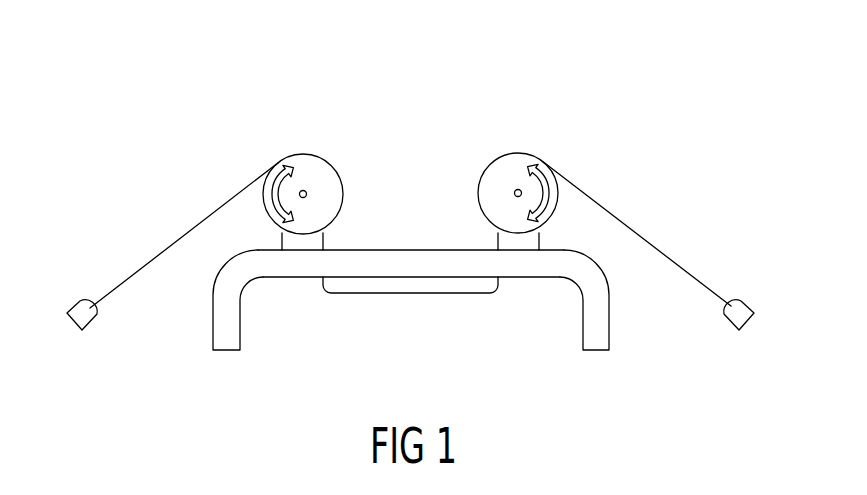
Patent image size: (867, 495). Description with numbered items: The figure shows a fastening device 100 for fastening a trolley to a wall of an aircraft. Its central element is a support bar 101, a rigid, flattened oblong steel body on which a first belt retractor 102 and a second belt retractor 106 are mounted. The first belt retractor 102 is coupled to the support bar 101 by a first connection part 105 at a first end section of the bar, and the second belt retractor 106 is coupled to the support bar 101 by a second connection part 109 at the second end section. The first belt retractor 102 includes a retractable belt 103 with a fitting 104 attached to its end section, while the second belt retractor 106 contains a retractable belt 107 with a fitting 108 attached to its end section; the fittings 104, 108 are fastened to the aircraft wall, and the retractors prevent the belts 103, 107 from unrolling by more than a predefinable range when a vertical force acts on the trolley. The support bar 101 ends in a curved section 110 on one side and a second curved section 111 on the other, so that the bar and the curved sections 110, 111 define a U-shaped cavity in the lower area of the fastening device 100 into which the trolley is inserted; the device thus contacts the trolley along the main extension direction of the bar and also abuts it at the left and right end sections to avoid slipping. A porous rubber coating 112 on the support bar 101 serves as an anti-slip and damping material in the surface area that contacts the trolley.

The fastening device 100 is at (432, 112).
The support bar 101 is at (412, 252).
The first belt retractor 102 is at (303, 165).
The retractable belt 103 is at (193, 225).
The fitting 104 is at (78, 302).
The first connection part 105 is at (318, 242).
The second belt retractor 106 is at (517, 165).
The retractable belt 107 is at (628, 222).
The fitting 108 is at (742, 300).
The second connection part 109 is at (502, 243).
The curved section 110 is at (207, 333).
The second curved section 111 is at (618, 332).
The porous rubber coating 112 is at (407, 283).